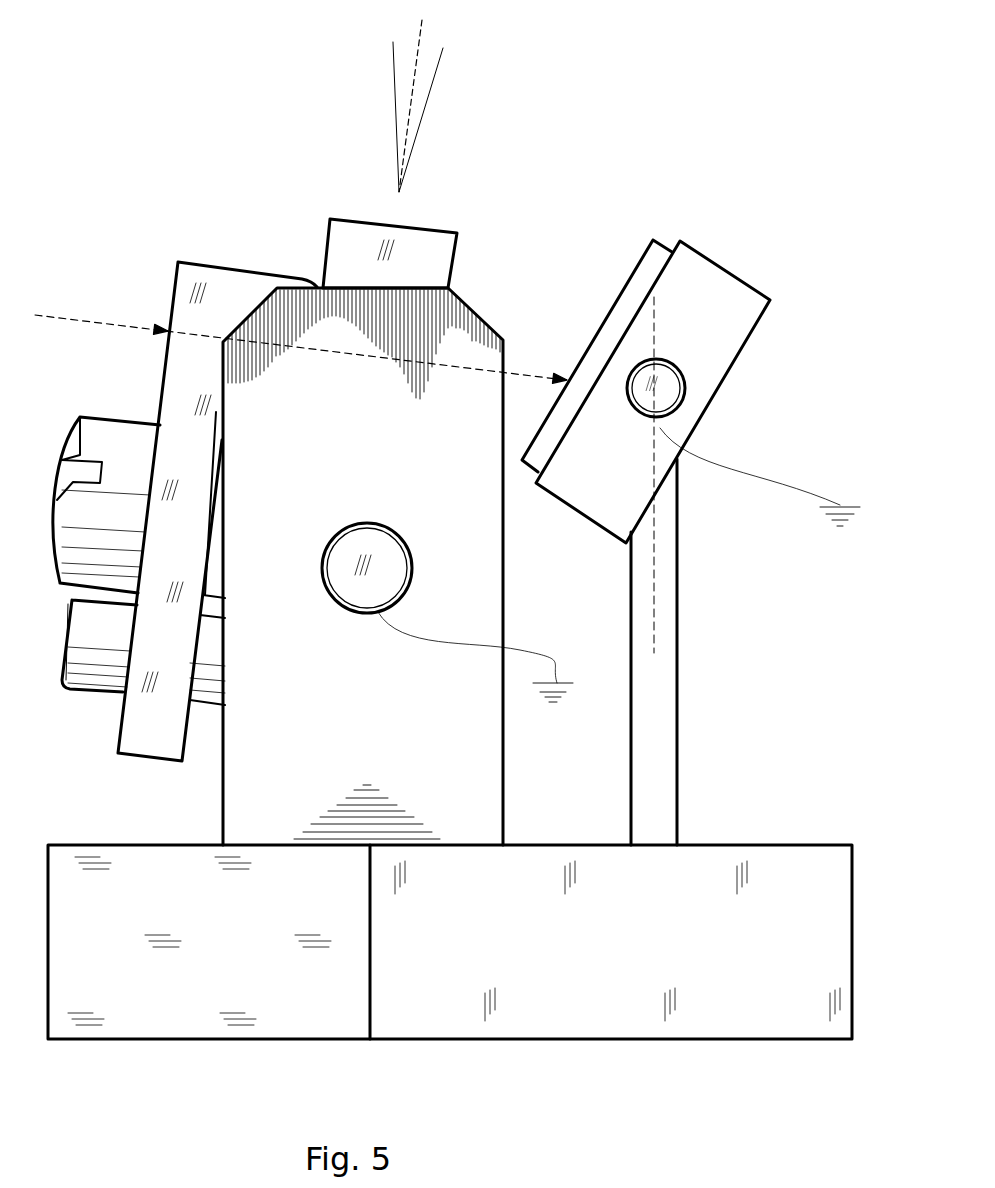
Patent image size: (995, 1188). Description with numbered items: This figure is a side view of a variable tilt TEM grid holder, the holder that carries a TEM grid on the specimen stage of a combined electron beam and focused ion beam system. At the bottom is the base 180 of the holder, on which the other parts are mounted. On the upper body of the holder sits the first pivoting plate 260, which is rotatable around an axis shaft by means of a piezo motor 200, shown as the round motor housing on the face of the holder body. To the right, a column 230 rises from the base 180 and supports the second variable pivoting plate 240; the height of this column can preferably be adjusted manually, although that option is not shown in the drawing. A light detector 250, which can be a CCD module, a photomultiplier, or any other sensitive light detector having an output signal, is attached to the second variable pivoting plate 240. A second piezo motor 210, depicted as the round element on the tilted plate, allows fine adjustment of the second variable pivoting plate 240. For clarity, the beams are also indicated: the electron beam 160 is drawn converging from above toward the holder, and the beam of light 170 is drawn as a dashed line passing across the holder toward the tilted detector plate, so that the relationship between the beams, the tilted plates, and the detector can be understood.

The electron beam 160 is at (394, 80).
The beam of light 170 is at (122, 325).
The base 180 is at (787, 845).
The piezo motor 200 is at (325, 585).
The second piezo motor 210 is at (685, 392).
The column 230 is at (677, 690).
The second variable pivoting plate 240 is at (718, 256).
The light detector 250 is at (630, 268).
The first pivoting plate 260 is at (457, 258).